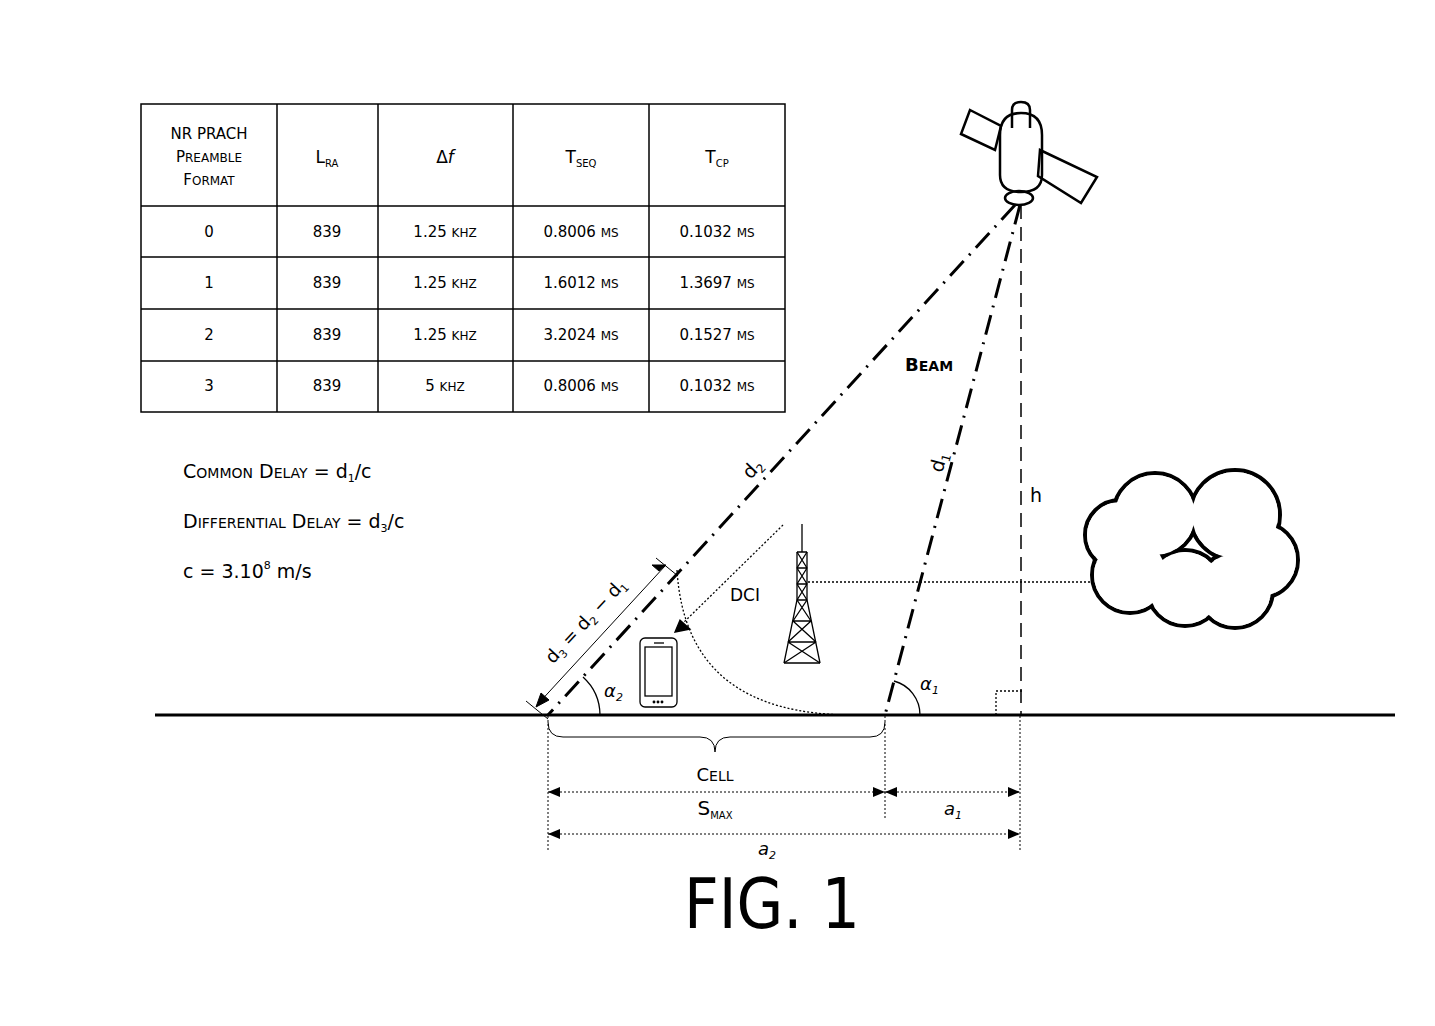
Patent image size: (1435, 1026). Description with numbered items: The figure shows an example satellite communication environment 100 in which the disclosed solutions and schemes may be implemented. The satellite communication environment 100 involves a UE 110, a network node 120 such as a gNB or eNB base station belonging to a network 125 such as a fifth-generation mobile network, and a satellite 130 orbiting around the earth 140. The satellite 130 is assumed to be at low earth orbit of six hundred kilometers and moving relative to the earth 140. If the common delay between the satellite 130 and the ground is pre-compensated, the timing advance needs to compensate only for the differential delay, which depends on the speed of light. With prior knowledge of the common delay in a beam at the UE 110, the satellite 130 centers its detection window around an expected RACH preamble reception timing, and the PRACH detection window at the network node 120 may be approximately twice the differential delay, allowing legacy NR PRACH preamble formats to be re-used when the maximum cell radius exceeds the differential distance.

The satellite communication environment 100 is at (764, 46).
The UE 110 is at (677, 670).
The network node 120 is at (820, 630).
The network 125 is at (1176, 569).
The satellite 130 is at (1040, 115).
The earth 140 is at (1196, 715).